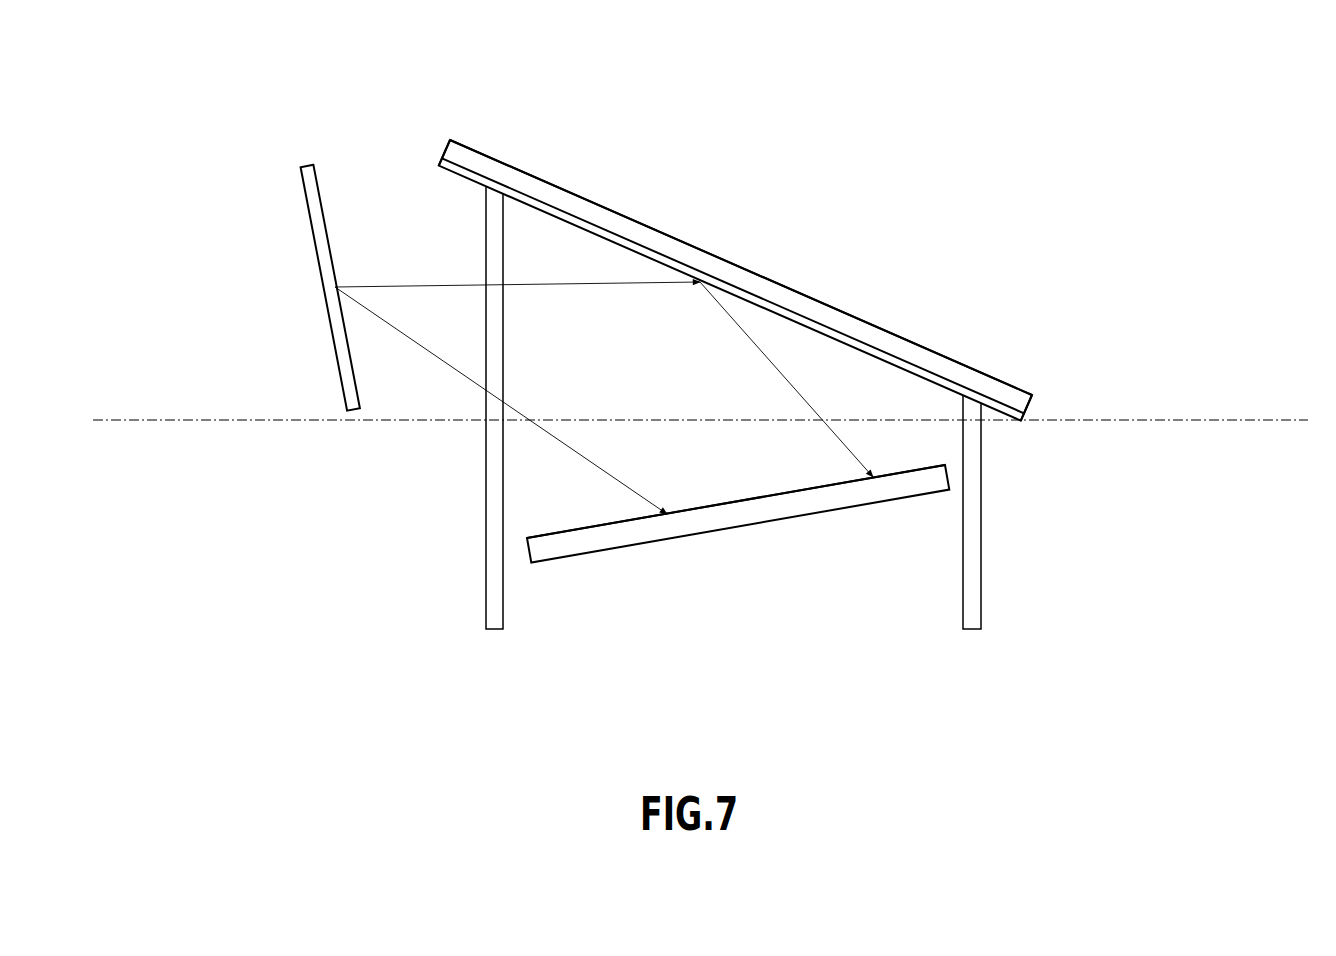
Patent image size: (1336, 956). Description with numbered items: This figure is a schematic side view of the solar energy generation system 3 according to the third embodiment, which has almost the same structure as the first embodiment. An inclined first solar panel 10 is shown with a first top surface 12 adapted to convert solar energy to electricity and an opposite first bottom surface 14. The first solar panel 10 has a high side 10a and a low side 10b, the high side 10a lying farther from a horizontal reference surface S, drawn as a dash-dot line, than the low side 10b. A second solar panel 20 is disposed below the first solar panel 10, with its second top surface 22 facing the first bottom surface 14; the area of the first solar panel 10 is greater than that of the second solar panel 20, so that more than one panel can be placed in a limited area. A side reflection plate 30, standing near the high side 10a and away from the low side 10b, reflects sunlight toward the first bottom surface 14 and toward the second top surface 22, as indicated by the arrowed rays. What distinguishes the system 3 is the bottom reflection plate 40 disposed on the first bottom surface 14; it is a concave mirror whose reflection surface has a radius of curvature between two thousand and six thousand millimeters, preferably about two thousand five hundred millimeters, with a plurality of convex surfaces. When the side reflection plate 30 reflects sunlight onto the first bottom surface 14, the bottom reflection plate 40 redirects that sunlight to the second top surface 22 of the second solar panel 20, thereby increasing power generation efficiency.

The solar energy generation system 3 is at (952, 213).
The first solar panel 10 is at (740, 232).
The high side 10a is at (450, 138).
The low side 10b is at (1028, 393).
The first top surface 12 is at (663, 230).
The first bottom surface 14 is at (580, 218).
The second solar panel 20 is at (738, 508).
The second top surface 22 is at (800, 488).
The side reflection plate 30 is at (304, 217).
The bottom reflection plate 40 is at (469, 181).
The horizontal reference surface S is at (1182, 420).